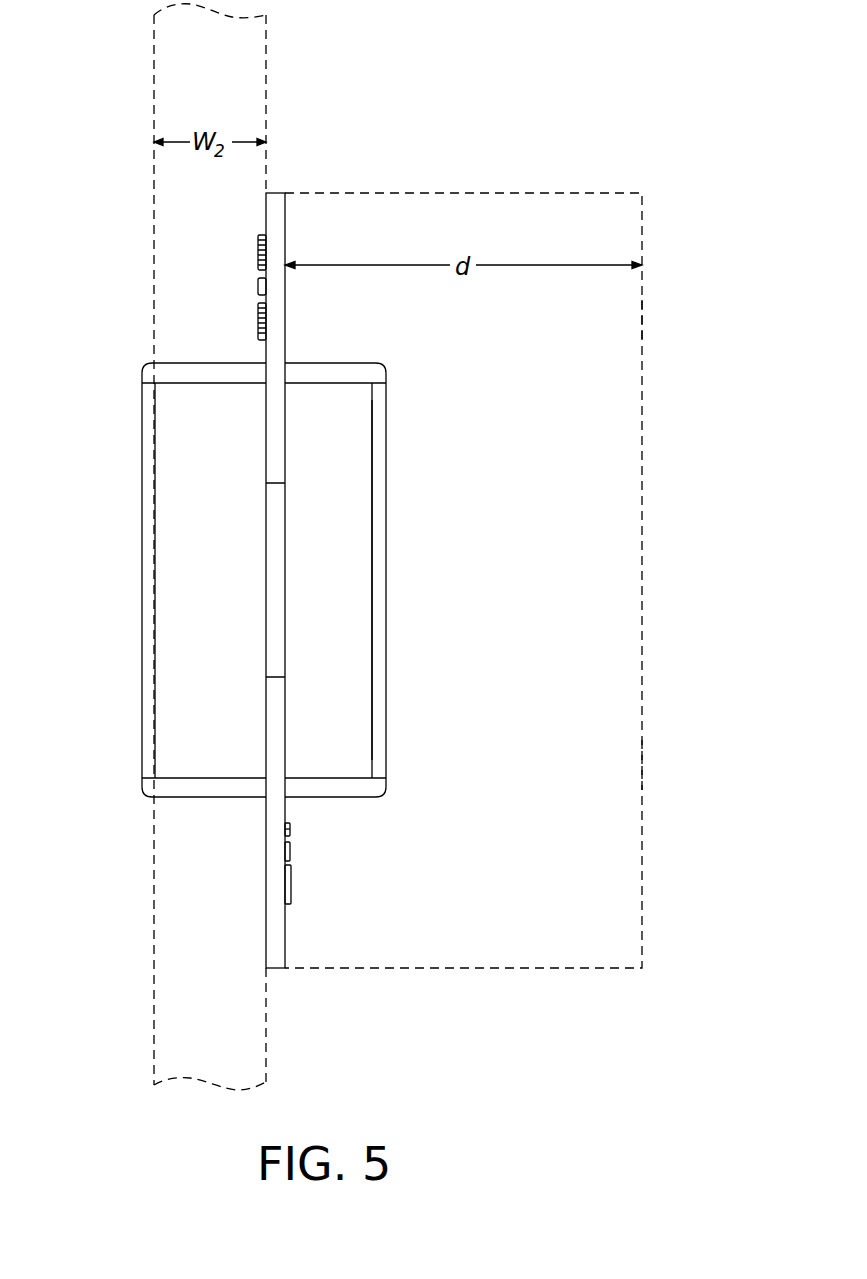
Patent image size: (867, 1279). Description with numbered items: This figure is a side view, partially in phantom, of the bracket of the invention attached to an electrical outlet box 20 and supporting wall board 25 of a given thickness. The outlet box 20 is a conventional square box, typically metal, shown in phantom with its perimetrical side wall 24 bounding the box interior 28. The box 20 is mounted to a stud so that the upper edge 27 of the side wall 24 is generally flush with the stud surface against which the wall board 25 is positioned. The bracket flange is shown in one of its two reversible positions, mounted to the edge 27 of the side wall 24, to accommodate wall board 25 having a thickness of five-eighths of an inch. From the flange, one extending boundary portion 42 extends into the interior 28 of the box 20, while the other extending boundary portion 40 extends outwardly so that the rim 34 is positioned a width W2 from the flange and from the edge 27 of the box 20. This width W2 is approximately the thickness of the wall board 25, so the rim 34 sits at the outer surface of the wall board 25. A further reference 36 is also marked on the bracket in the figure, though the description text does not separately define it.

The electrical outlet box 20 is at (615, 330).
The perimetrical side wall 24 is at (455, 190).
The wall board 25 is at (242, 80).
The upper edge of side wall 27 is at (276, 192).
The box interior 28 is at (560, 778).
The rim 34 is at (142, 375).
The right side wall 36 is at (387, 410).
The extending boundary portion 40 is at (175, 647).
The extending boundary portion 42 is at (360, 567).